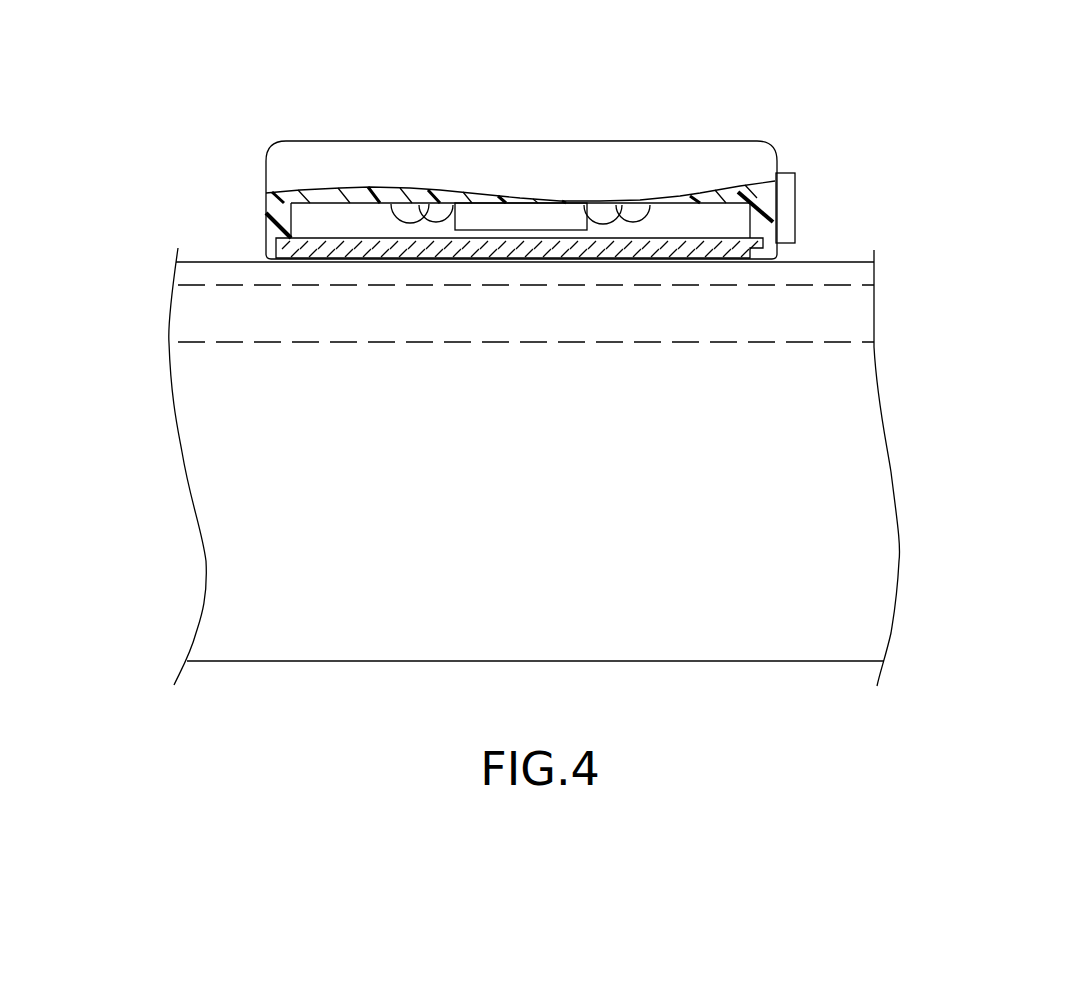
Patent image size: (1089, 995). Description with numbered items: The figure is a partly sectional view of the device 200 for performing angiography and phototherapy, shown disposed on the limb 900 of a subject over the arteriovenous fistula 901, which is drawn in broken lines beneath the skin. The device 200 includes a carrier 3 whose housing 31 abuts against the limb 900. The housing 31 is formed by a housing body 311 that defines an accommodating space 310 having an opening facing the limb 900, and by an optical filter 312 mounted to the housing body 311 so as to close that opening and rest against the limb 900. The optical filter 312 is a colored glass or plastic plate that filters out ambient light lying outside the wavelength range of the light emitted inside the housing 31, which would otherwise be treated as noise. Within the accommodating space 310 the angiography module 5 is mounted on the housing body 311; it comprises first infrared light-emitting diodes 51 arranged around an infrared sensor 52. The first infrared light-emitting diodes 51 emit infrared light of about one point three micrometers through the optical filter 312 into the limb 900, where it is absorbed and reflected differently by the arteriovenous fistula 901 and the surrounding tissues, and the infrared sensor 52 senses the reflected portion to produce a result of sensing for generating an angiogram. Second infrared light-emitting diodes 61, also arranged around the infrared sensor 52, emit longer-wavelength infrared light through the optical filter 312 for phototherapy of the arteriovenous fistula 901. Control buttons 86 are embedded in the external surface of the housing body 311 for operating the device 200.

The carrier 3 is at (485, 145).
The housing 31 is at (521, 145).
The housing body 311 is at (345, 155).
The optical filter 312 is at (322, 240).
The accommodating space 310 is at (707, 215).
The angiography module 5 is at (517, 188).
The first infrared light-emitting diodes 51 is at (412, 210).
The infrared sensor 52 is at (543, 215).
The second infrared light-emitting diodes 61 is at (635, 210).
The device 200 is at (541, 145).
The control buttons 86 is at (797, 212).
The limb 900 is at (853, 487).
The arteriovenous fistula 901 is at (843, 312).